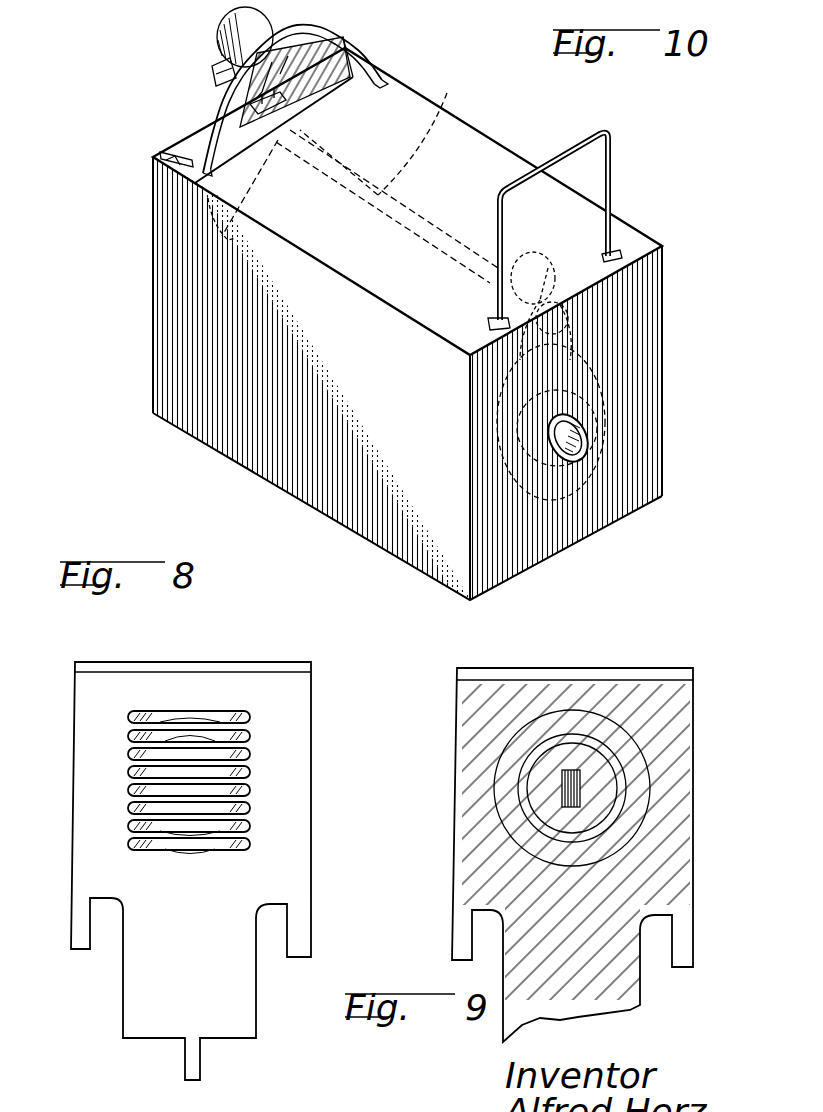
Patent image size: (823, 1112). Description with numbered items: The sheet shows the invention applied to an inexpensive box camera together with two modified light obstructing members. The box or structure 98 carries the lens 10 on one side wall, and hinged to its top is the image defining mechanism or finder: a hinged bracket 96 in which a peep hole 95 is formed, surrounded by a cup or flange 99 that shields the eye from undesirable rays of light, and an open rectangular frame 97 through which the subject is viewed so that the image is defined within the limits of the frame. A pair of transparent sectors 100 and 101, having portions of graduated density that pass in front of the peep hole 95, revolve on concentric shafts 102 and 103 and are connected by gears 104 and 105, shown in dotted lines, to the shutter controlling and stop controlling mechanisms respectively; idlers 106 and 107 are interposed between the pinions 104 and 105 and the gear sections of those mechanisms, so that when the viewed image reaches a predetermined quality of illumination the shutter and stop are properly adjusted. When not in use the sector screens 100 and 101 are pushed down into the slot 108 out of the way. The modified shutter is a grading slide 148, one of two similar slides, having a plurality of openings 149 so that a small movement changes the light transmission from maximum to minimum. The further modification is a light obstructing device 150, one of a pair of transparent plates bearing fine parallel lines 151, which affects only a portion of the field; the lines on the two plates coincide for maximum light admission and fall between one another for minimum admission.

In FIG. 10, the lens 10 is at (590, 438).
In FIG. 10, the peep hole 95 is at (275, 60).
In FIG. 10, the hinged bracket 96 is at (270, 78).
In FIG. 10, the open frame 97 is at (612, 198).
In FIG. 10, the box or structure 98 is at (470, 160).
In FIG. 10, the cup or flange 99 is at (238, 36).
In FIG. 10, the sector 100 is at (212, 74).
In FIG. 10, the sector screen 101 is at (304, 36).
In FIG. 10, the concentric shaft 102 is at (386, 78).
In FIG. 10, the concentric shaft 103 is at (447, 93).
In FIG. 10, the gear or pinion 104 is at (552, 276).
In FIG. 10, the gear or pinion 105 is at (548, 268).
In FIG. 10, the idler 106 is at (472, 376).
In FIG. 10, the idler 107 is at (575, 332).
In FIG. 10, the slot 108 is at (160, 163).
In FIG. 8, the slide 148 is at (100, 818).
In FIG. 8, the openings 149 is at (250, 755).
In FIG. 9, the light obstructing device 150 is at (660, 744).
In FIG. 9, the fine parallel lines 151 is at (560, 800).